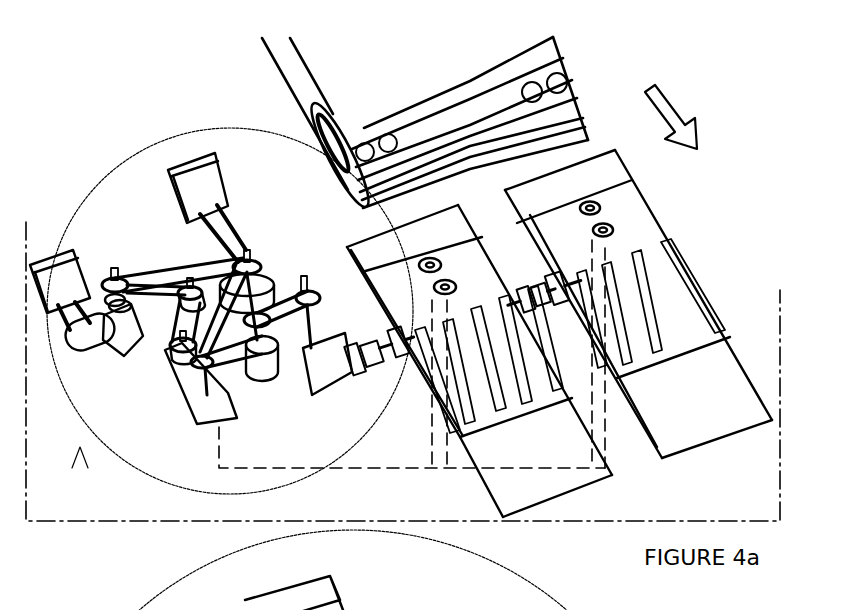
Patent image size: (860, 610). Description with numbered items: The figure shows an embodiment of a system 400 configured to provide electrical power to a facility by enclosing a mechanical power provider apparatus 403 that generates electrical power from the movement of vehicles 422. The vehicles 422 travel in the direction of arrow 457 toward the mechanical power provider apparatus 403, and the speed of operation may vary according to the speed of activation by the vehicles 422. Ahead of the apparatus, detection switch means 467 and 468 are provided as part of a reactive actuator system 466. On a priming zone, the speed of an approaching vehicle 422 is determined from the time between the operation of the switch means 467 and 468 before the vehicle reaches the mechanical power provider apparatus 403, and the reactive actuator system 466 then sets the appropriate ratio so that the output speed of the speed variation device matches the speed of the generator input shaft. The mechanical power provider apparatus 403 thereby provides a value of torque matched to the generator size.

The system 400 is at (85, 524).
The mechanical power provider apparatus 403 is at (697, 273).
The vehicle 422 is at (573, 85).
The arrow 457 is at (676, 107).
The reactive actuator system 466 is at (388, 468).
The detection switch means 467 is at (432, 284).
The detection switch means 468 is at (420, 255).